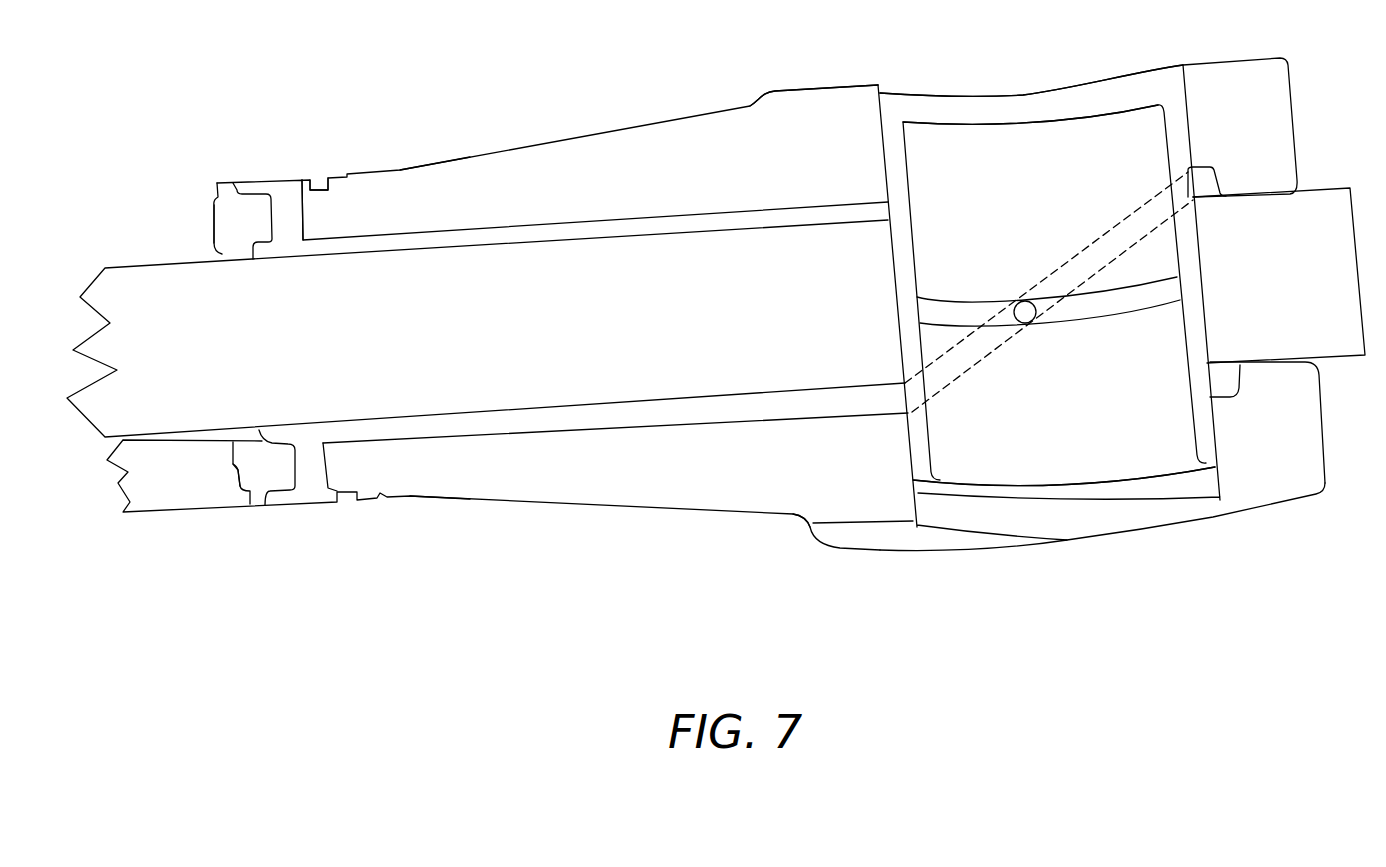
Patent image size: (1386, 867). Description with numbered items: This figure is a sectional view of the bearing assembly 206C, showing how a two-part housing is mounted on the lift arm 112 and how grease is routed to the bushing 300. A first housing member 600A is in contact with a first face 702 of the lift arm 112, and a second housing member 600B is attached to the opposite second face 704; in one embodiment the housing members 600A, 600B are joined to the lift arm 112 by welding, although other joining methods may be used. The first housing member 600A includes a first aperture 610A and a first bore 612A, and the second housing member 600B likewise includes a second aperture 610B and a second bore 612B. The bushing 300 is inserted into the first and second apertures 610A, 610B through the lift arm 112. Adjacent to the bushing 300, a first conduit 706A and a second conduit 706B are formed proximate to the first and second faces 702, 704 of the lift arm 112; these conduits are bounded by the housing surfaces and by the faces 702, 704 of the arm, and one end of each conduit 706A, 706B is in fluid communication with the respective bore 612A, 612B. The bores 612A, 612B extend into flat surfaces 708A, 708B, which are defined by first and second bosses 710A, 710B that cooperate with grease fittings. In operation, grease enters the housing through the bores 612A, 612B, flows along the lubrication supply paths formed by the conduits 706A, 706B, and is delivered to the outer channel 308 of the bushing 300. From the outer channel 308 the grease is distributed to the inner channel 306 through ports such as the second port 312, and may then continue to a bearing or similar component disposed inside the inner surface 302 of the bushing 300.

The lift arm 112 is at (585, 336).
The first housing member 600A is at (540, 115).
The second housing member 600B is at (571, 533).
The first boss 710A is at (227, 182).
The second boss 710B is at (257, 506).
The first bore 612A is at (278, 218).
The second bore 612B is at (300, 462).
The flat surface 708A is at (311, 178).
The flat surface 708B is at (337, 502).
The first conduit 706A is at (433, 240).
The second conduit 706B is at (448, 430).
The first face 702 is at (727, 232).
The second face 704 is at (668, 393).
The bushing 300 is at (989, 512).
The inner surface 302 is at (1072, 423).
The inner channel 306 is at (1123, 312).
The outer channel 308 is at (1117, 237).
The second port 312 is at (1021, 302).
The first aperture 610A is at (1011, 82).
The second aperture 610B is at (1079, 542).
The bearing assembly 206C is at (1246, 642).